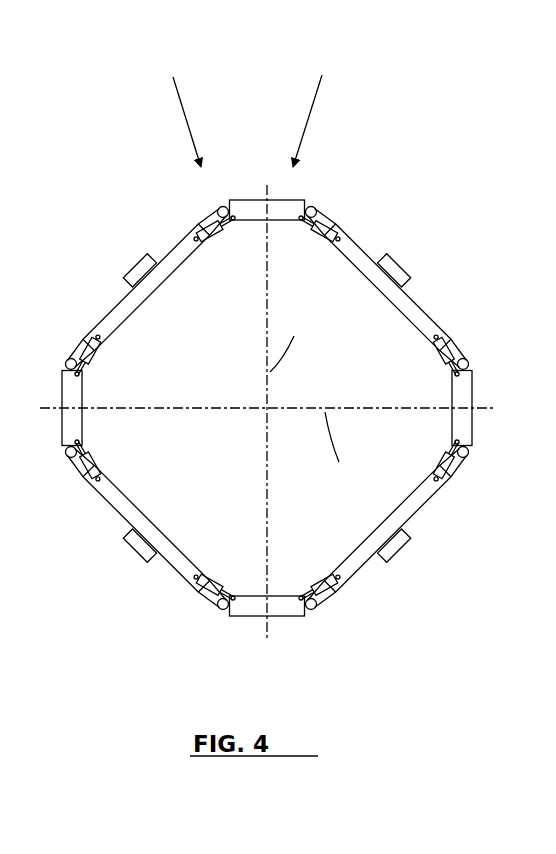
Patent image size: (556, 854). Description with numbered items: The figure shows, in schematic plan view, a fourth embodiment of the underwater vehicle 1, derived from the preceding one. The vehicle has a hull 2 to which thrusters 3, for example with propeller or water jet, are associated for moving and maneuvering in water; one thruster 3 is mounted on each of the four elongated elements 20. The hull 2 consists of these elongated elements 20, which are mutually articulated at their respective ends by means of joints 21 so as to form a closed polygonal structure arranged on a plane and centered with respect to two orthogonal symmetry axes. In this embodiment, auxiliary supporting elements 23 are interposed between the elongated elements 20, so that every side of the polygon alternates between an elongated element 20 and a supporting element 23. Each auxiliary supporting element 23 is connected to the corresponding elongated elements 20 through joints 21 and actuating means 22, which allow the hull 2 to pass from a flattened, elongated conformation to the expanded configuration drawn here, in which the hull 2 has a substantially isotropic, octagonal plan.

The underwater vehicle 1 is at (357, 195).
The hull 2 is at (170, 602).
The thrusters 3 is at (143, 262).
The elongated elements 20 is at (125, 300).
The joints 21 is at (218, 208).
The actuating means 22 is at (223, 228).
The auxiliary supporting elements 23 is at (256, 202).